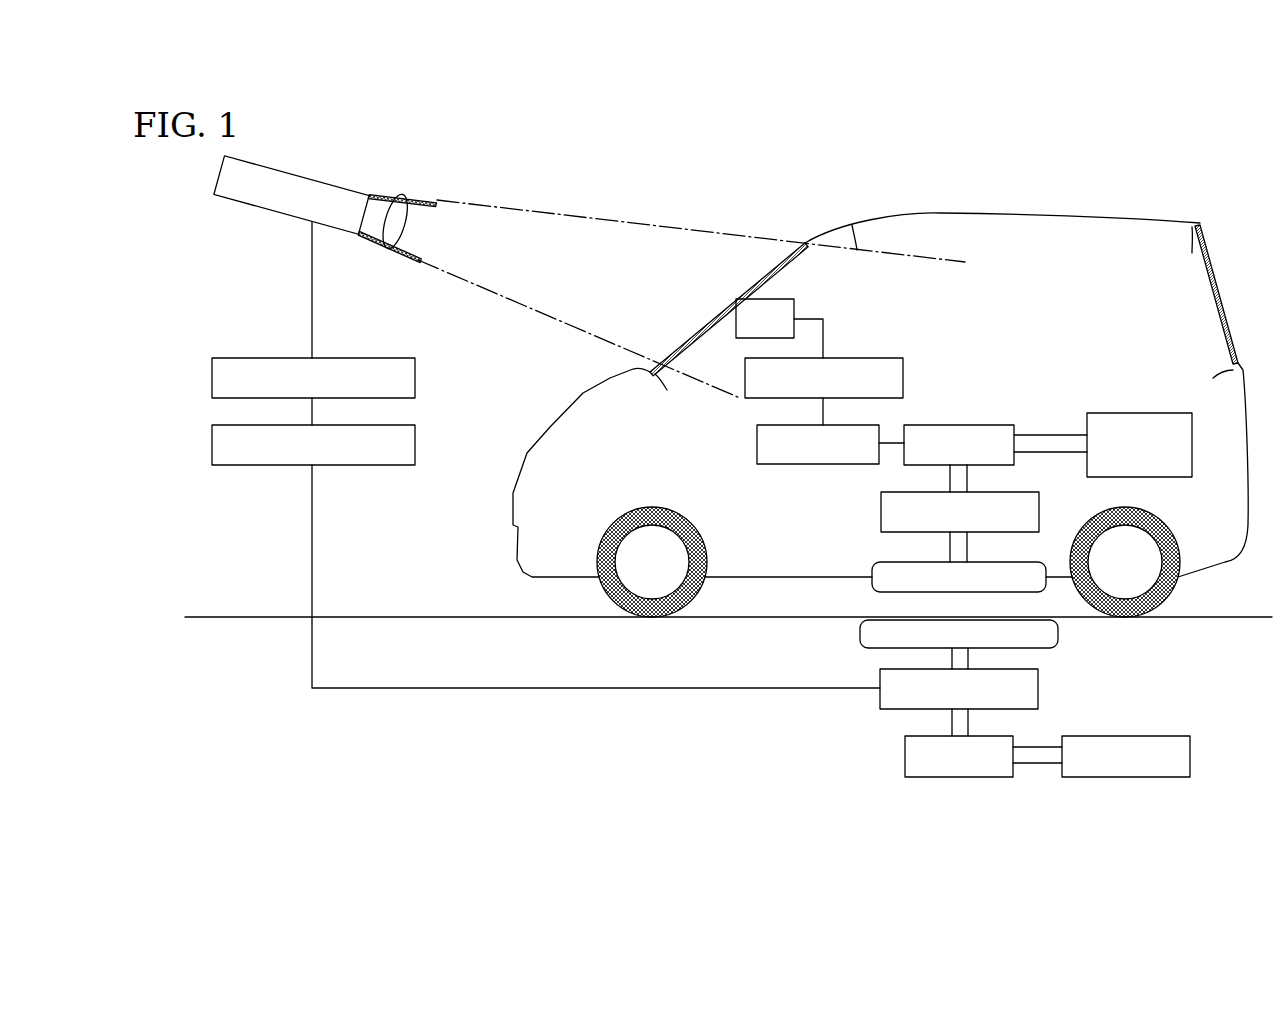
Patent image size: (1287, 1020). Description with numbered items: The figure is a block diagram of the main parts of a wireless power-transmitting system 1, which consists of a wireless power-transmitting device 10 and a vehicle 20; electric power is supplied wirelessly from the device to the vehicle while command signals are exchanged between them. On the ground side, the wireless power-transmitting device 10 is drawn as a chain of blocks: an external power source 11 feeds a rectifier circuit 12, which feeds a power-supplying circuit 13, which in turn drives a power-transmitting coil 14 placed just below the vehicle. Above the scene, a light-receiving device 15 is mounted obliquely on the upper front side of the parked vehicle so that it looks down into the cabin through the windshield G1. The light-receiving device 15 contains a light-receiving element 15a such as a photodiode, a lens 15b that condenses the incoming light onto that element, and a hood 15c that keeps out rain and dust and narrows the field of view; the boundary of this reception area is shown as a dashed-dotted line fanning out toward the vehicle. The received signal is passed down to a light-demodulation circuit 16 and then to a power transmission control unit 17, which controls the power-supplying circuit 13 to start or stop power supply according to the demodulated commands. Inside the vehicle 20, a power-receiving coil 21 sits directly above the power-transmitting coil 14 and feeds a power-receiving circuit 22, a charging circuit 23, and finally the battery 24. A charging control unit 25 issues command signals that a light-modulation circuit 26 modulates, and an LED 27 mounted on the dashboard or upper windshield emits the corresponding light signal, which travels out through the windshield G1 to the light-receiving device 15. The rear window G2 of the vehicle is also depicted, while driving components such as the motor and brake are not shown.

The wireless power-transmitting system 1 is at (1093, 134).
The wireless power-transmitting device 10 is at (889, 779).
The external power source 11 is at (1147, 735).
The rectifier circuit 12 is at (975, 735).
The power-supplying circuit 13 is at (1038, 692).
The power-transmitting coil 14 is at (975, 616).
The light-receiving device 15 is at (291, 150).
The light-receiving element 15a is at (338, 187).
The lens 15b is at (402, 208).
The hood 15c is at (427, 197).
The light-demodulation circuit 16 is at (417, 381).
The power transmission control unit 17 is at (417, 446).
The vehicle 20 is at (938, 213).
The power-receiving coil 21 is at (973, 561).
The power-receiving circuit 22 is at (975, 491).
The charging circuit 23 is at (977, 424).
The battery 24 is at (1153, 413).
The charging control unit 25 is at (838, 424).
The light-modulation circuit 26 is at (903, 381).
The LED 27 is at (800, 307).
The windshield G1 is at (775, 267).
The rear window glass G2 is at (1216, 240).